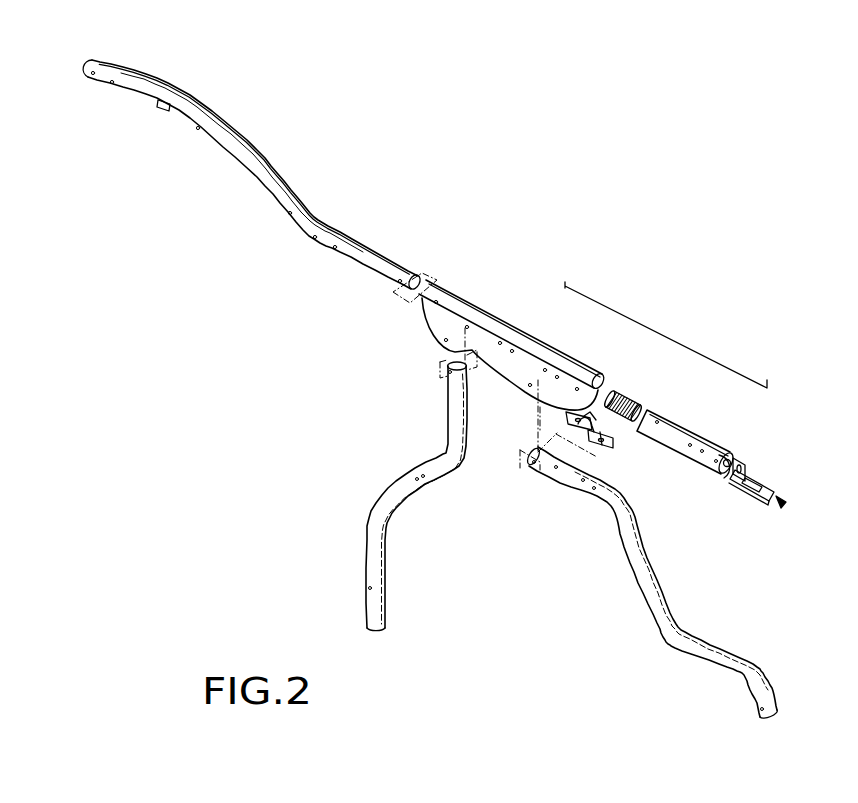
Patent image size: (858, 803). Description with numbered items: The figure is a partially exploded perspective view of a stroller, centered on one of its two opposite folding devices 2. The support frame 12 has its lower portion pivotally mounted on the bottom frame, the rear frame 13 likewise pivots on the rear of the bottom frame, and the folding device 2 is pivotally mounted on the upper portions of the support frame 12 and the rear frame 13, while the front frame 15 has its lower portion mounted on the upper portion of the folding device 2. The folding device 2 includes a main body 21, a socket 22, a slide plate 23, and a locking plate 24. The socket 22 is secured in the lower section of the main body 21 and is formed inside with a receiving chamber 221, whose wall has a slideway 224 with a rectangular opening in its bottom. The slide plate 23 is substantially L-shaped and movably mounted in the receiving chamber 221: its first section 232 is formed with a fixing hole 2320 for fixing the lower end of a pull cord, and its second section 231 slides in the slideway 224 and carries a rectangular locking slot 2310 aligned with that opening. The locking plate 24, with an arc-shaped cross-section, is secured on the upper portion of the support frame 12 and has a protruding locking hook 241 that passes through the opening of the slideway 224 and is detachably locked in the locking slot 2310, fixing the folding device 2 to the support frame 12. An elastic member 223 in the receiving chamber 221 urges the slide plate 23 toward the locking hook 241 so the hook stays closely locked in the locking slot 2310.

The folding device 2 is at (672, 340).
The support frame 12 is at (655, 603).
The rear frame 13 is at (377, 510).
The front frame 15 is at (263, 167).
The main body 21 is at (518, 335).
The socket 22 is at (678, 437).
The slide plate 23 is at (782, 502).
The locking plate 24 is at (612, 446).
The receiving chamber 221 is at (731, 457).
The elastic member 223 is at (626, 397).
The slideway 224 is at (729, 478).
The second section 231 is at (763, 492).
The first section 232 is at (733, 478).
The locking hook 241 is at (580, 437).
The locking slot 2310 is at (763, 480).
The fixing hole 2320 is at (742, 465).